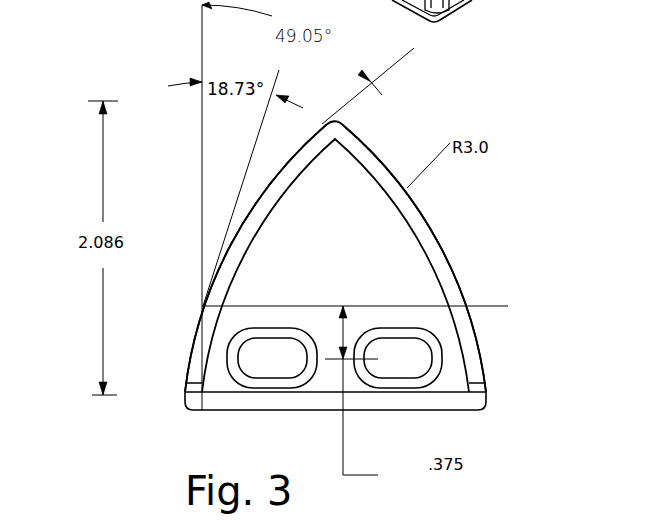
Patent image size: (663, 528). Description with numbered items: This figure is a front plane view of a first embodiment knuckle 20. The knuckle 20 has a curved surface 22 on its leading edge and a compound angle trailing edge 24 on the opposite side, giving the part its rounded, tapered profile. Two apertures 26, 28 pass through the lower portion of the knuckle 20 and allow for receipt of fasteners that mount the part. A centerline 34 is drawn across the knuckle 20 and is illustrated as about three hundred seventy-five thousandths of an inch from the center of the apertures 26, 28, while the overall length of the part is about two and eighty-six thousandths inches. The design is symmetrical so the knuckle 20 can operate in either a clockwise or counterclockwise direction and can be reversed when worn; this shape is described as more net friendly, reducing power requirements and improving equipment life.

The knuckle 20 is at (422, 277).
The curved surface 22 is at (422, 205).
The compound angle trailing edge 24 is at (230, 237).
The aperture 26 is at (253, 375).
The aperture 28 is at (420, 375).
The centerline 34 is at (483, 308).